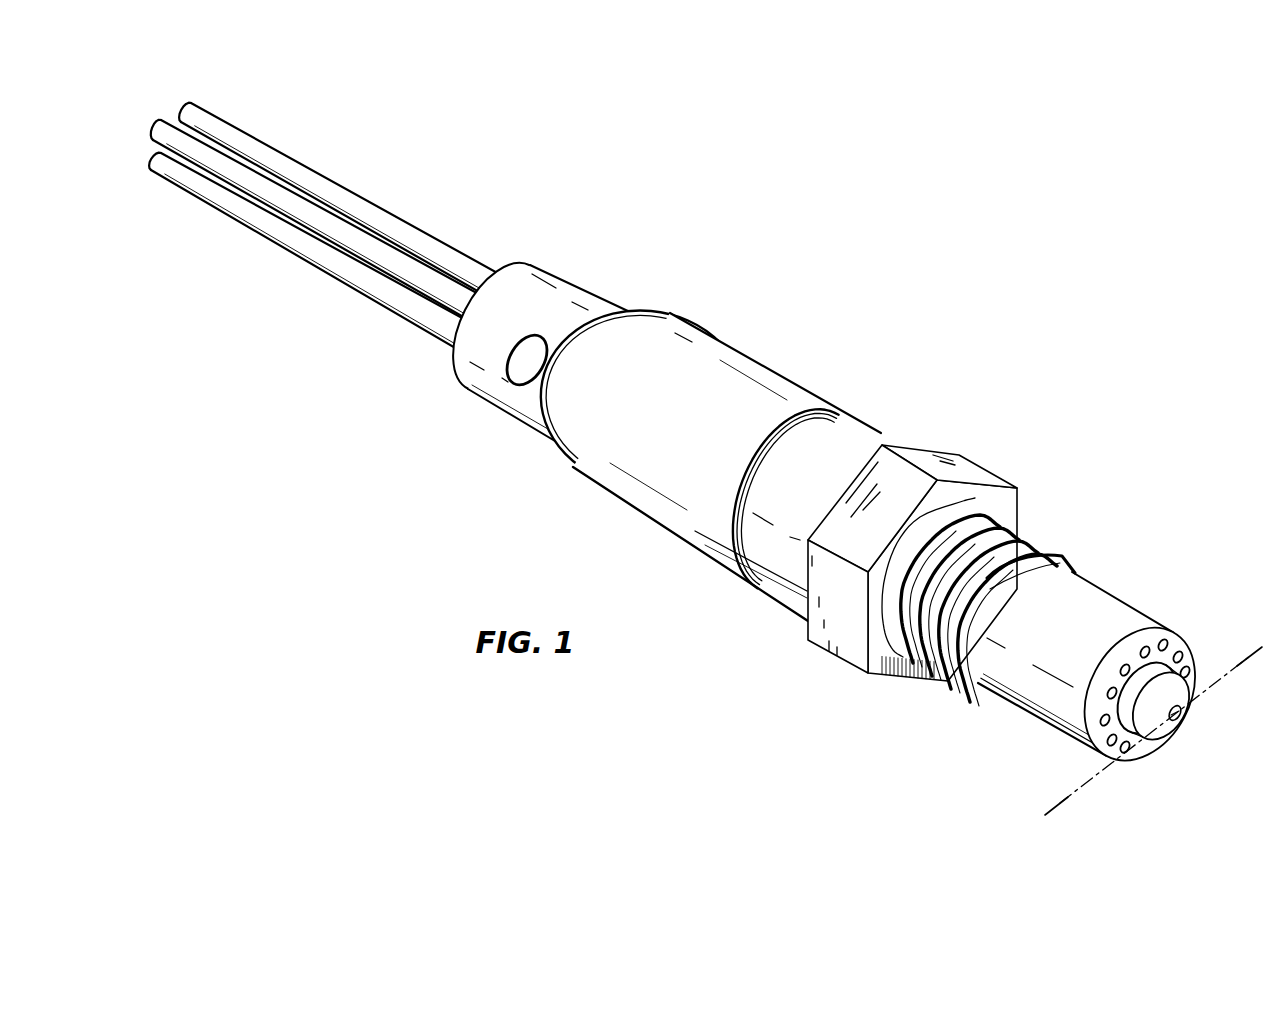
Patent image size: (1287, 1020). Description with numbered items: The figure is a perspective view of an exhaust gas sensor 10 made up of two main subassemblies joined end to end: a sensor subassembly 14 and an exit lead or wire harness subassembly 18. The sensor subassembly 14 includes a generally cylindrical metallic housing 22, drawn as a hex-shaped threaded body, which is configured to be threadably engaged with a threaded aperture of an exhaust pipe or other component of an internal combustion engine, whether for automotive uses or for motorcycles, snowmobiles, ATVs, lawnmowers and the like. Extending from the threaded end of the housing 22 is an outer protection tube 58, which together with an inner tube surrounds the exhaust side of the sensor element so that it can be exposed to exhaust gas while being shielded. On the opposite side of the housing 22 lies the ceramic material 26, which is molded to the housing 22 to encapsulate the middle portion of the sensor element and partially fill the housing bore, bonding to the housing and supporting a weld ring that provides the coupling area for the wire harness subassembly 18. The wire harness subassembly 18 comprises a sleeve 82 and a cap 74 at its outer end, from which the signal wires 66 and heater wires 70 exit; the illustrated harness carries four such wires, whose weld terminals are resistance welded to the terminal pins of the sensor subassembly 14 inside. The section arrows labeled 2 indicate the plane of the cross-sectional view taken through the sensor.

The exhaust gas sensor 10 is at (705, 459).
The sensor subassembly 14 is at (996, 606).
The wire harness subassembly 18 is at (390, 283).
The metallic housing 22 is at (1008, 500).
The ceramic material 26 is at (845, 443).
The outer protection tube 58 is at (1090, 597).
The signal wires 66 is at (322, 183).
The heater wires 70 is at (322, 224).
The cap 74 is at (567, 292).
The sleeve 82 is at (712, 352).
The section line 2- 2 is at (1057, 793).